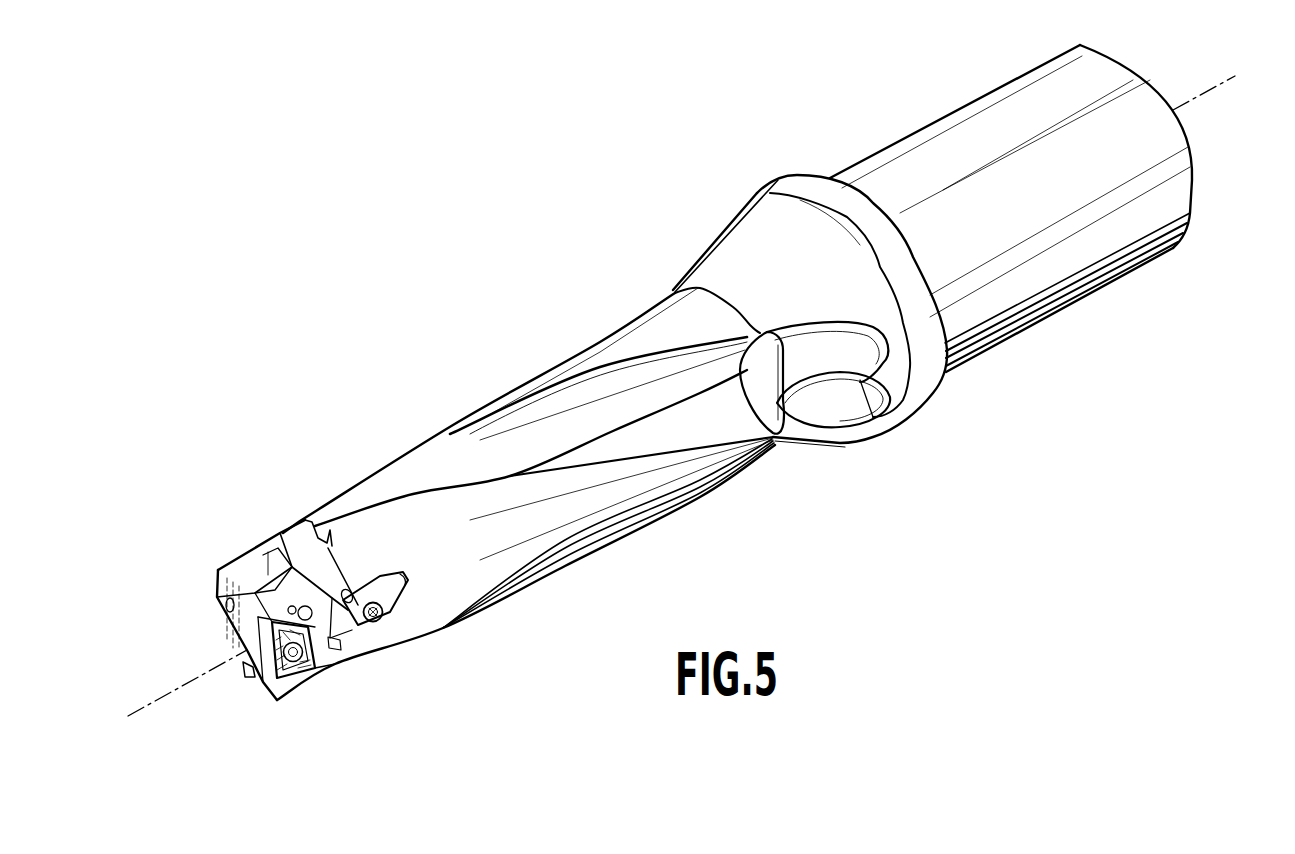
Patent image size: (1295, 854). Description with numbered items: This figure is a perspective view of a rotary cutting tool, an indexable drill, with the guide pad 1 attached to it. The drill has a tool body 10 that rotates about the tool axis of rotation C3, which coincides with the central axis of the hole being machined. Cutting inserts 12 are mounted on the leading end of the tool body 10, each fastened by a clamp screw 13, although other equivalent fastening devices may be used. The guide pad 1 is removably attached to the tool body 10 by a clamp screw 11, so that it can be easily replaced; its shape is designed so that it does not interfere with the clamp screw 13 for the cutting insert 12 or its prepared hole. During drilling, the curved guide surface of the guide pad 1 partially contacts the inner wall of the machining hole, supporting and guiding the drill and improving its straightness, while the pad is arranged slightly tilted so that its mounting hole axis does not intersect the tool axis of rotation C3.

The tool body 10 is at (522, 386).
The guide pad 1 is at (376, 590).
The clamp screw 11 is at (375, 624).
The cutting insert 12 is at (277, 583).
The clamp screw 13 is at (297, 673).
The tool axis of rotation C3 is at (1200, 100).